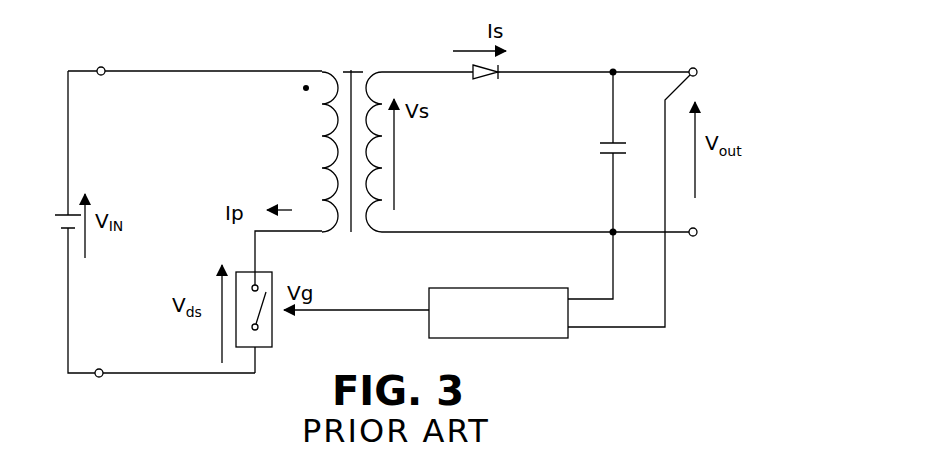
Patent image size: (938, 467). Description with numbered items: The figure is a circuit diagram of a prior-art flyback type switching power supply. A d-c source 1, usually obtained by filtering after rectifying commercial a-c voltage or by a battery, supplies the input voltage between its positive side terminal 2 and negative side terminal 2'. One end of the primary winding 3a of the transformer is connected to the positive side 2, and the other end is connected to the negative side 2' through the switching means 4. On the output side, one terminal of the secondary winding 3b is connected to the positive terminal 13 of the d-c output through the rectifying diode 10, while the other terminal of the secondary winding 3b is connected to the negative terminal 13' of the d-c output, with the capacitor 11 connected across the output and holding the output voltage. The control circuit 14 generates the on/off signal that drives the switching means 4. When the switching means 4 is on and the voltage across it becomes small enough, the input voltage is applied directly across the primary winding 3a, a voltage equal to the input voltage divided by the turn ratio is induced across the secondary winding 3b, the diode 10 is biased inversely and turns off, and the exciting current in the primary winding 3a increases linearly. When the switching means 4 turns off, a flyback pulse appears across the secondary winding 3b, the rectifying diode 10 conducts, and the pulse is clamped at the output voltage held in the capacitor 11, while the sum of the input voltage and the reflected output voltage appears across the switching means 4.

The d-c source 1 is at (60, 225).
The positive side terminal 2 is at (90, 53).
The negative side terminal 2' is at (93, 395).
The primary winding 3a is at (322, 148).
The secondary winding 3b is at (378, 187).
The switching means 4 is at (272, 330).
The rectifying diode 10 is at (484, 76).
The capacitor 11 is at (598, 147).
The positive terminal of the d-c output 13 is at (700, 48).
The negative terminal of the d-c output 13' is at (699, 258).
The control circuit 14 is at (510, 339).